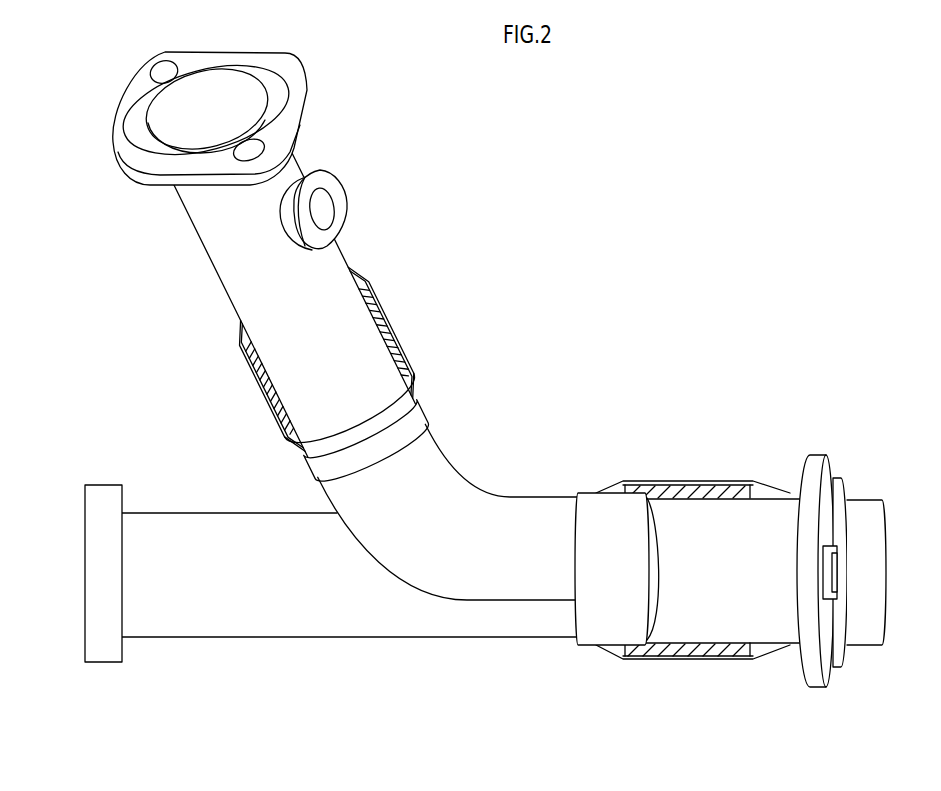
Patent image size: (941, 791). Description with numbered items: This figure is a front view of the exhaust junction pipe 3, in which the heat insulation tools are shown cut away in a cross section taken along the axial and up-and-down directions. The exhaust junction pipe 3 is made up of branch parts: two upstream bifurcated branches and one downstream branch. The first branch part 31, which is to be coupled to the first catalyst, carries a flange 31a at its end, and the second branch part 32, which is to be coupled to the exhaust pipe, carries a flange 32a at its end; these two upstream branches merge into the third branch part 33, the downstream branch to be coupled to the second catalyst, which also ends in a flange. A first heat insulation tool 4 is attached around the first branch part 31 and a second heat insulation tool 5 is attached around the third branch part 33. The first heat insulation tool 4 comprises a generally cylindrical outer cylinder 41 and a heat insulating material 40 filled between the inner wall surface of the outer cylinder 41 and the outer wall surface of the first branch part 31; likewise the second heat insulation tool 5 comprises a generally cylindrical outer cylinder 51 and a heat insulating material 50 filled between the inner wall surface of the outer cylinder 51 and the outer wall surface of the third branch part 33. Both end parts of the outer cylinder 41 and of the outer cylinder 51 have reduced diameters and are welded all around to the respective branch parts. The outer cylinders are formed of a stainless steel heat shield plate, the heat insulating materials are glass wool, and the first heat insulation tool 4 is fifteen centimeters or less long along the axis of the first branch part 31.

The exhaust junction pipe 3 is at (713, 167).
The first branch part 31 is at (200, 228).
The flange 31a is at (307, 112).
The first heat insulation tool 4 is at (373, 359).
The heat insulating material 40 is at (393, 341).
The outer cylinder 41 is at (380, 306).
The second branch part 32 is at (250, 637).
The flange 32a is at (102, 663).
The third branch part 33 is at (730, 535).
The second heat insulation tool 5 is at (693, 500).
The heat insulating material 50 is at (719, 481).
The outer cylinder 51 is at (668, 481).